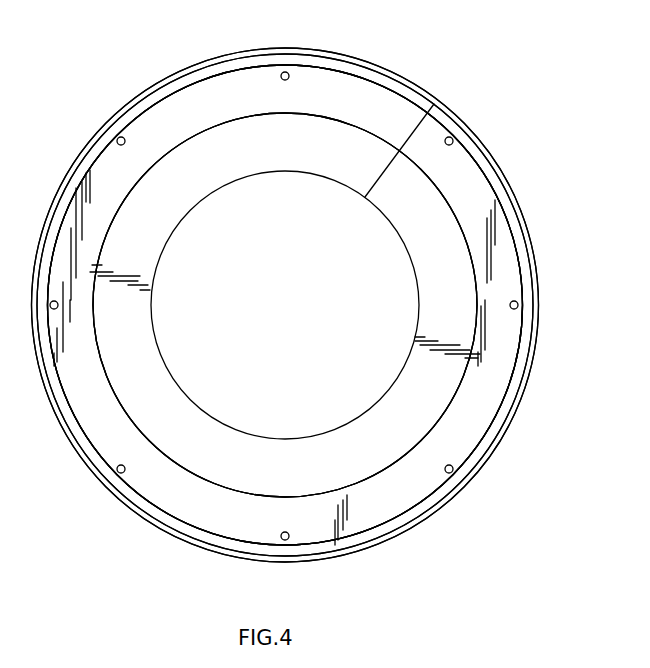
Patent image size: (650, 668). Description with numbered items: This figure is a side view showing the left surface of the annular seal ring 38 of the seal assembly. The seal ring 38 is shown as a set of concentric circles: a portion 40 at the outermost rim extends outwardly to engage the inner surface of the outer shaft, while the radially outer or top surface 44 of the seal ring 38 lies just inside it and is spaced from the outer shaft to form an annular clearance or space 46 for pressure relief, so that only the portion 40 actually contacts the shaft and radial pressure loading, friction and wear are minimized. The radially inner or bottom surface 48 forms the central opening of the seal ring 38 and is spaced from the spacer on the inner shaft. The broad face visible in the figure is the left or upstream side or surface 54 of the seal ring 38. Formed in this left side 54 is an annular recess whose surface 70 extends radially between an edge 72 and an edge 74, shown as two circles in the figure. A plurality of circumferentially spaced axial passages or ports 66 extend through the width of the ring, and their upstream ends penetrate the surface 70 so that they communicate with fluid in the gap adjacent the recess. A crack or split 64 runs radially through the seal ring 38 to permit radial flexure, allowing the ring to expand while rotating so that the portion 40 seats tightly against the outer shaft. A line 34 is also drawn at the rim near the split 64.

The radial cut line 34 is at (412, 100).
The seal ring 38 is at (555, 286).
The portion 40 is at (192, 64).
The top surface 44 is at (375, 72).
The annular clearance 46 is at (249, 52).
The bottom surface 48 is at (325, 176).
The left side surface 54 is at (171, 220).
The split 64 is at (388, 180).
The axial passages 66 is at (288, 72).
The recess surface 70 is at (258, 105).
The edge 72 is at (322, 71).
The edge 74 is at (358, 120).